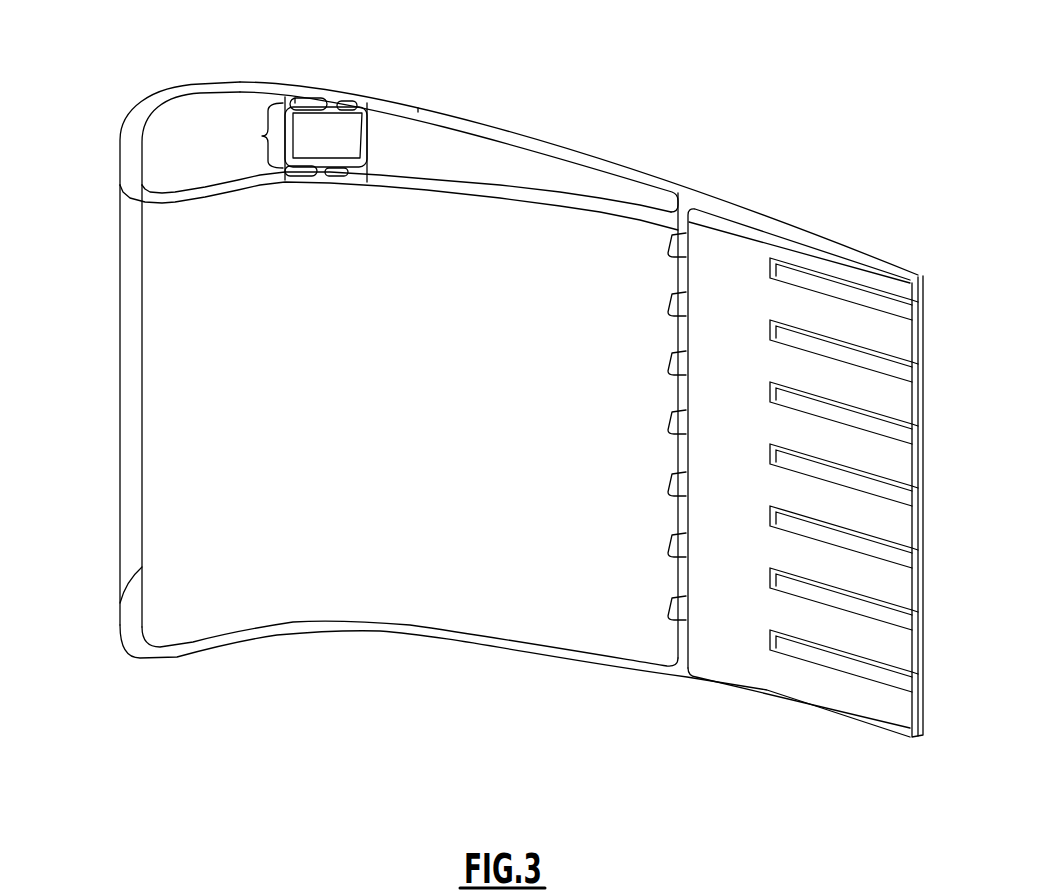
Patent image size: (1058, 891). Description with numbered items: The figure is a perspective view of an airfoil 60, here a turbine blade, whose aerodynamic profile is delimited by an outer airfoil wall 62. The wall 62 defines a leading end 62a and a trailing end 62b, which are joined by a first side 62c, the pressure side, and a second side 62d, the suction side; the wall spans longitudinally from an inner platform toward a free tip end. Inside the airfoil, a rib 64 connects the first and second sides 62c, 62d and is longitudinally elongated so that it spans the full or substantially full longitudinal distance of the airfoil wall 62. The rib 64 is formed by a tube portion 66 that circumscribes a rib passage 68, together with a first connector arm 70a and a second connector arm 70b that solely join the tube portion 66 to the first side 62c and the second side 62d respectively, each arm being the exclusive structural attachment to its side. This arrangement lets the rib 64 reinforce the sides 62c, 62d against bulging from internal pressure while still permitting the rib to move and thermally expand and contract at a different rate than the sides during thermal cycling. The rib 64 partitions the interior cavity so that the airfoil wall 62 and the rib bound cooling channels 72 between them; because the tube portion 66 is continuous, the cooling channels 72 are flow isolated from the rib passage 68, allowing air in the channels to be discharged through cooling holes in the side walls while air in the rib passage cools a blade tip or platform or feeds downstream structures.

The airfoil 60 is at (251, 675).
The airfoil wall 62 is at (178, 201).
The leading end 62a is at (111, 190).
The trailing end 62b is at (932, 270).
The first side 62c is at (473, 210).
The second side 62d is at (513, 122).
The rib 64 is at (262, 136).
The tube portion 66 is at (374, 115).
The rib passage 68 is at (325, 138).
The first connector arm 70a is at (340, 178).
The second connector arm 70b is at (333, 101).
The cooling channels 72 is at (294, 90).